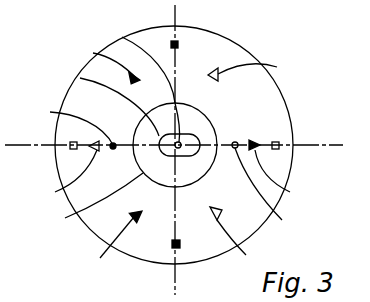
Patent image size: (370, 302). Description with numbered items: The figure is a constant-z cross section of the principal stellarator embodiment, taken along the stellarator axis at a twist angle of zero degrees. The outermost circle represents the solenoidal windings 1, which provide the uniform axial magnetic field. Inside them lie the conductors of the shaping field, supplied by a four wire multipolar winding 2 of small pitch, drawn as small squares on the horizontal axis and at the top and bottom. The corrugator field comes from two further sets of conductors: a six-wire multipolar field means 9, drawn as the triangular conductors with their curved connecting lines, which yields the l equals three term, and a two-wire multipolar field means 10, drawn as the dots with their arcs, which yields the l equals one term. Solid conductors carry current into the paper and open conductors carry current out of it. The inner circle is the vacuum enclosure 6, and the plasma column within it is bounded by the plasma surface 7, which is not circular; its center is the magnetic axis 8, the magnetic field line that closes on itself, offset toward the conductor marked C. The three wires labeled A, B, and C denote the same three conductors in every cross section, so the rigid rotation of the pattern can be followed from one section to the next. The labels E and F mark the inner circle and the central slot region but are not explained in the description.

The rotating disc 1 is at (160, 263).
The fixed reference marks 2 is at (70, 148).
The radial guide line 6 is at (97, 202).
The guide curve 7 is at (80, 78).
The guide curve 8 is at (122, 37).
The direction arrows 9 is at (93, 53).
The trajectory curves 10 is at (50, 112).
The point A is at (282, 134).
The point B is at (253, 137).
The point C is at (231, 137).
The inner circle E is at (190, 109).
The central slot F is at (180, 143).